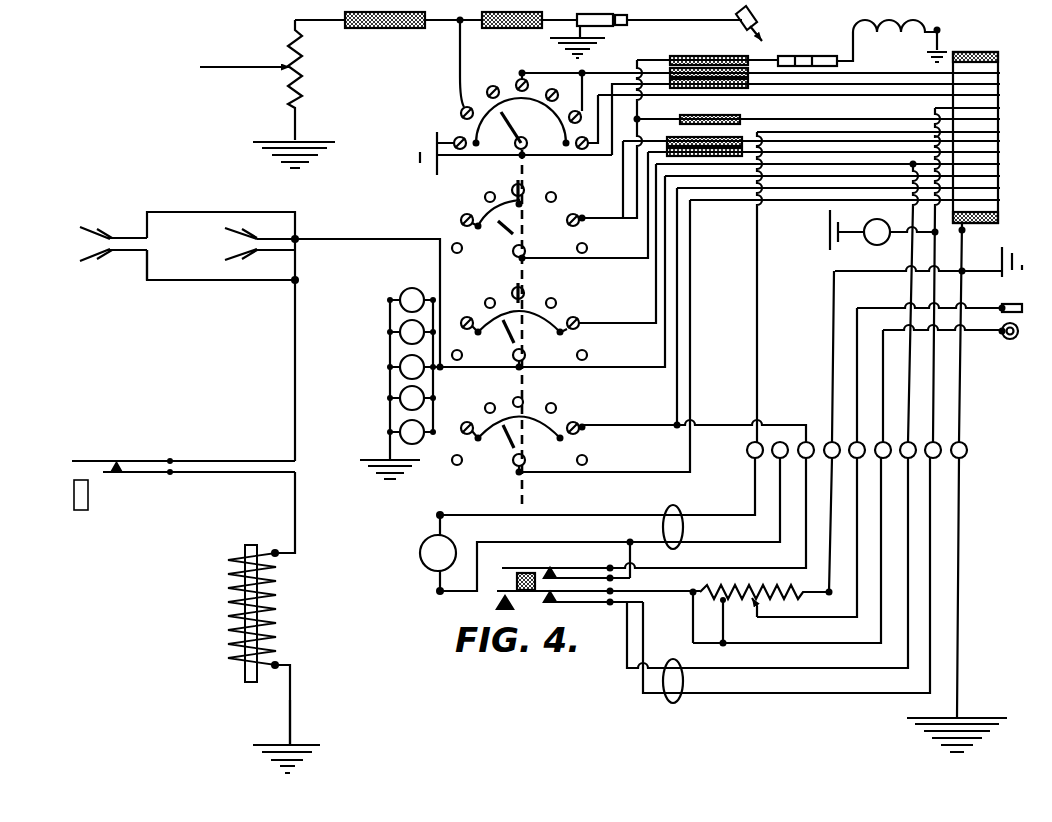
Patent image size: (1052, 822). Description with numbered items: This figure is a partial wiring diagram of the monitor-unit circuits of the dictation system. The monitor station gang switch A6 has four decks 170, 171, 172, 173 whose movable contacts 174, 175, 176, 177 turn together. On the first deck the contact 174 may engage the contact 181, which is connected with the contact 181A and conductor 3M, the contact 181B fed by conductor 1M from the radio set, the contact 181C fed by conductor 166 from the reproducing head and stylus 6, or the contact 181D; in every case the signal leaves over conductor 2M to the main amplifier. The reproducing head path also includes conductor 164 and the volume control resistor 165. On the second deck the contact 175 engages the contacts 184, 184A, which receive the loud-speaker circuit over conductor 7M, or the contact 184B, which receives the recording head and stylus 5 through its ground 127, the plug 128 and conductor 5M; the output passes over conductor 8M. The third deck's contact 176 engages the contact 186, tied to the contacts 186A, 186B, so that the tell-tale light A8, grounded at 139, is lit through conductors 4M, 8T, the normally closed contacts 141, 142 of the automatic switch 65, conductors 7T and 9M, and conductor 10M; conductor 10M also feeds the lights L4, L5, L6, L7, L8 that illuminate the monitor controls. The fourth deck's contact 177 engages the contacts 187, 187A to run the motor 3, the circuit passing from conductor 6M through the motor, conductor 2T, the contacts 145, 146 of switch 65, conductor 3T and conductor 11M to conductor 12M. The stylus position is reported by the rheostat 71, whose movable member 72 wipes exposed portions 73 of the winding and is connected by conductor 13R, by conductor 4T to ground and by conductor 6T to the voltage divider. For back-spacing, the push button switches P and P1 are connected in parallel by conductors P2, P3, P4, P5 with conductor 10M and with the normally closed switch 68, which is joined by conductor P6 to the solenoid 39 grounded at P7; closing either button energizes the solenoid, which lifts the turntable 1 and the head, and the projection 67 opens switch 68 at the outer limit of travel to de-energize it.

The conductor 166 is at (312, 20).
The volume control resistor 165 is at (305, 73).
The conductor 164 is at (216, 68).
The push button switch P is at (95, 247).
The push button switch P1 is at (298, 246).
The conductor P2 is at (168, 212).
The conductor P3 is at (165, 281).
The conductor P4 is at (338, 239).
The conductor P5 is at (295, 369).
The conductor P6 is at (296, 519).
The ground P7 is at (302, 742).
The circuit closer 68 is at (100, 461).
The projection 67 is at (90, 494).
The solenoid 39 is at (266, 598).
The light L4 is at (406, 290).
The light L5 is at (400, 331).
The light L6 is at (400, 363).
The light L7 is at (400, 403).
The light L8 is at (400, 435).
The deck contact 181 is at (455, 140).
The deck contact 181A is at (582, 150).
The deck contact 181B is at (491, 86).
The deck contact 181C is at (466, 106).
The deck contact 181D is at (558, 92).
The movable contact 174 is at (504, 131).
The deck 170 is at (556, 115).
The conductor 1M is at (546, 60).
The conductor 2M is at (524, 157).
The conductor 3M is at (795, 105).
The conductor 4M is at (896, 230).
The conductor 5M is at (712, 98).
The conductor 6M is at (545, 515).
The conductor 7M is at (586, 184).
The conductor 8M is at (628, 236).
The conductor 9M is at (605, 323).
The conductor 10M is at (600, 367).
The conductor 11M is at (668, 380).
The conductor 12M is at (618, 472).
The reproducing head and stylus 6 is at (733, 31).
The plug 128 is at (822, 48).
The ground 127 is at (872, 5).
The recording head and stylus 5 is at (918, 38).
The ground 139 is at (826, 225).
The tell-tale signal light A8 is at (873, 245).
The turntable 1 is at (1002, 250).
The conductor 13R is at (857, 545).
The conductor 2T is at (540, 542).
The conductor 3T is at (712, 423).
The conductor 4T is at (832, 331).
The conductor 6T is at (1001, 338).
The conductor 7T is at (913, 388).
The conductor 8T is at (937, 413).
The motor 3 is at (420, 556).
The circuit closer 65 is at (560, 561).
The motor circuit contact 145 is at (580, 552).
The motor circuit contact 146 is at (548, 603).
The light circuit contact 141 is at (636, 590).
The light circuit contact 142 is at (560, 603).
The rheostat 71 is at (742, 606).
The movable member 72 is at (762, 606).
The exposed portions of winding 73 is at (782, 586).
The monitor station gang switch A6 is at (512, 270).
The deck contact 184 is at (523, 182).
The deck contact 184A is at (458, 216).
The deck contact 184B is at (588, 212).
The deck 171 is at (544, 210).
The movable contact 175 is at (512, 251).
The deck contact 186 is at (463, 317).
The deck contact 186A is at (523, 290).
The deck contact 186B is at (578, 316).
The deck 172 is at (543, 325).
The movable contact 176 is at (506, 347).
The deck contact 187 is at (464, 422).
The deck contact 187A is at (573, 420).
The deck 173 is at (547, 427).
The movable contact 177 is at (497, 456).